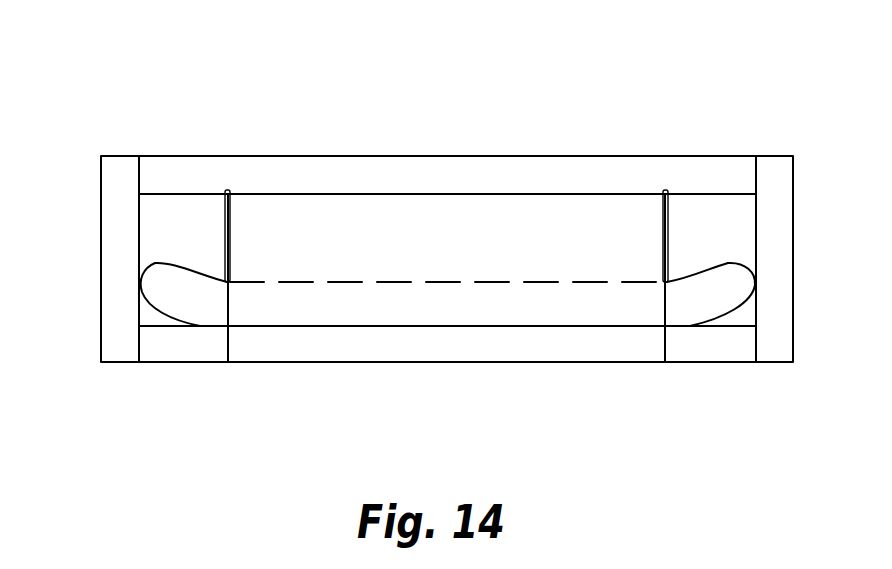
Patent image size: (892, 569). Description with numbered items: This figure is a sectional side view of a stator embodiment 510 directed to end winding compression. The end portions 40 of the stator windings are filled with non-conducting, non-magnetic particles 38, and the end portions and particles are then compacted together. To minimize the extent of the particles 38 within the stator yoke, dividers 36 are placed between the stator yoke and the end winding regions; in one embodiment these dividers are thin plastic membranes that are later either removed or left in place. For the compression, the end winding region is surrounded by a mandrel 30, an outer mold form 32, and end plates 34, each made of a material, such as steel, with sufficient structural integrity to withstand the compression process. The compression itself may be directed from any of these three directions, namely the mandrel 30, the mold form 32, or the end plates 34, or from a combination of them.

The assembly 510 is at (582, 83).
The mandrel 30 is at (428, 352).
The outer mold form 32 is at (447, 157).
The end plates 34 is at (110, 295).
The dividers 36 is at (223, 202).
The non-conducting, non-magnetic particles 38 is at (171, 207).
The end portions of stator windings 40 is at (155, 263).